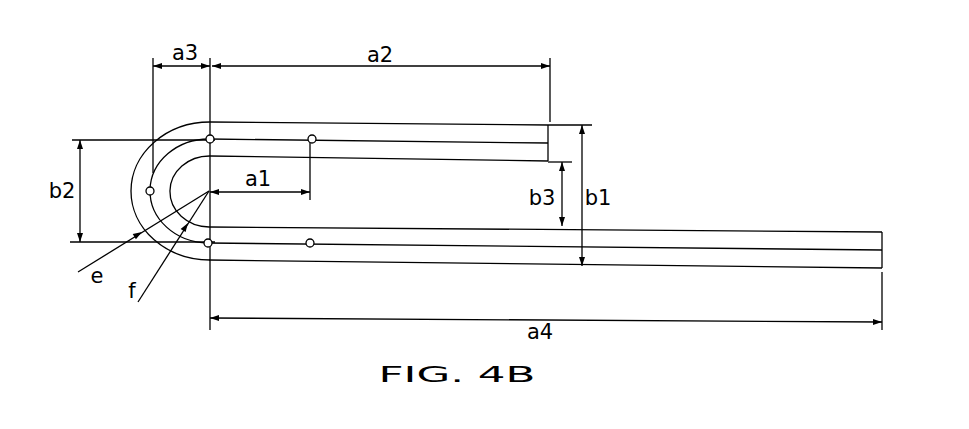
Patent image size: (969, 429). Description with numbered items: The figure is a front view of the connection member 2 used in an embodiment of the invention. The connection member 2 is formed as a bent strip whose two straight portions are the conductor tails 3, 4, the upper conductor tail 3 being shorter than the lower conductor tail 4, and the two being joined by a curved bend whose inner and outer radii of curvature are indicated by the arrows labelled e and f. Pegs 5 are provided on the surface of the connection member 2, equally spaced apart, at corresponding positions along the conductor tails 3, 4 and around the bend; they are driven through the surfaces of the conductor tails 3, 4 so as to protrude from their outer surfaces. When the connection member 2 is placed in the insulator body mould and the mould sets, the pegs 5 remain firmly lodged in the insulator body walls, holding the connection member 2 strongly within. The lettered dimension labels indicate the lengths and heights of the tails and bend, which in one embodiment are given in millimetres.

The connection member 2 is at (506, 196).
The conductor tail 3 is at (477, 122).
The conductor tail 4 is at (478, 266).
The pegs 5 is at (208, 136).